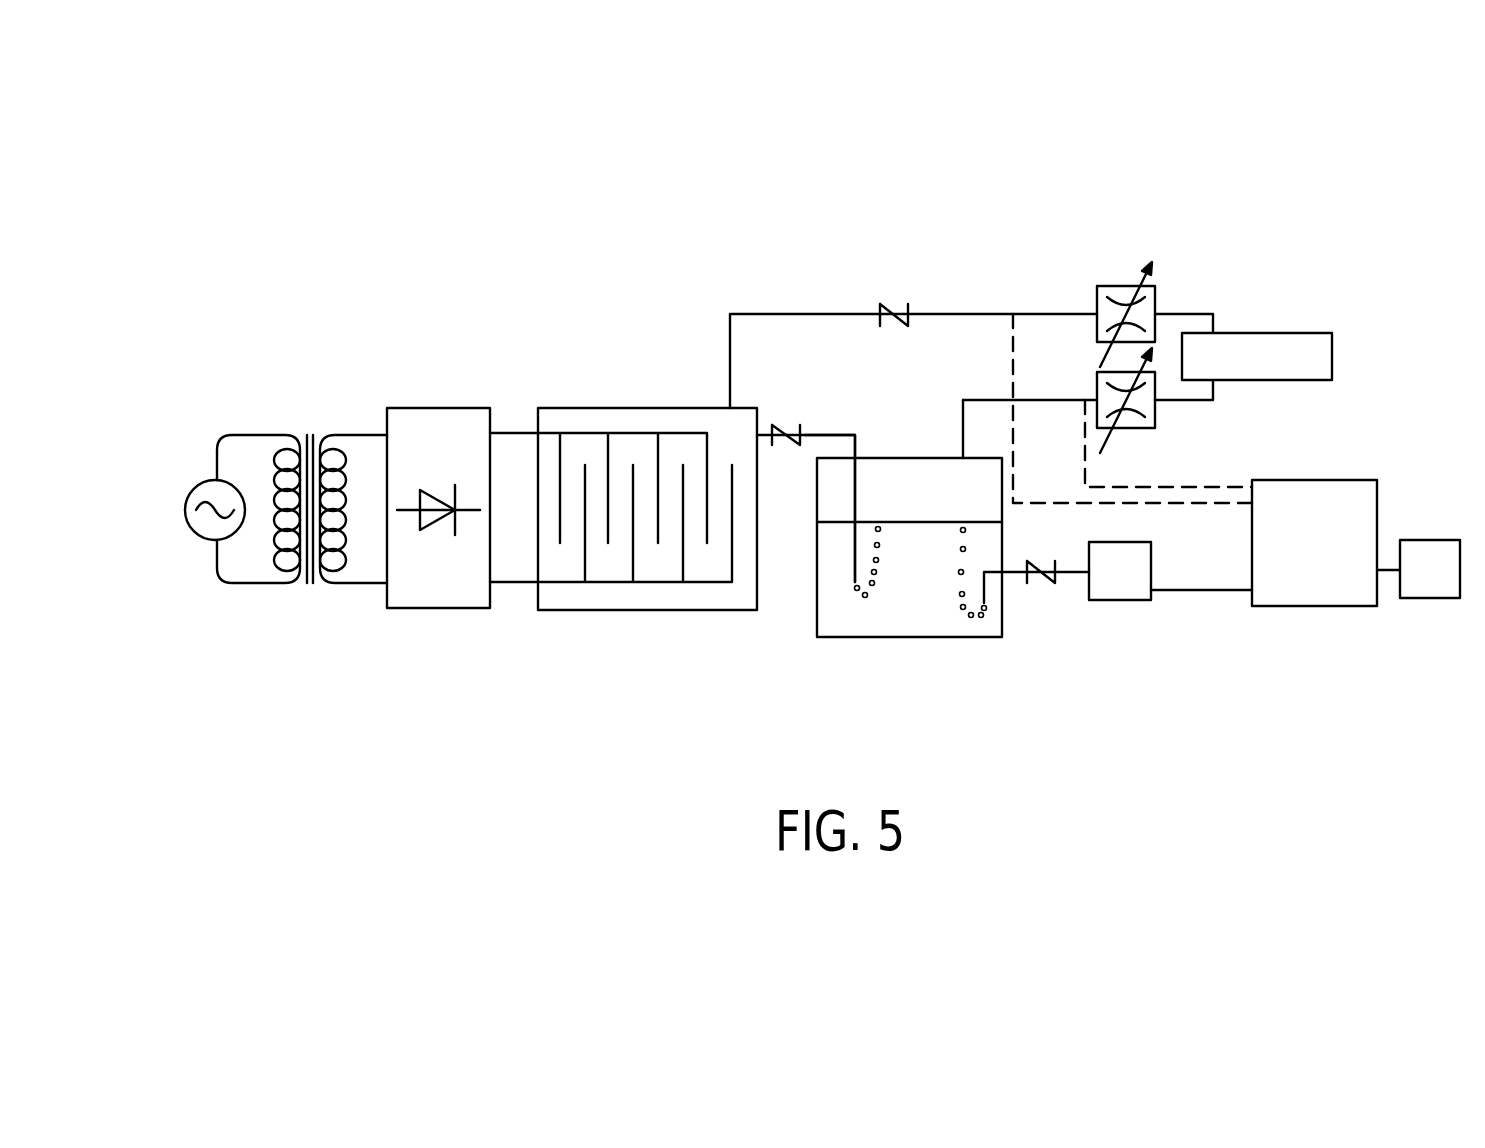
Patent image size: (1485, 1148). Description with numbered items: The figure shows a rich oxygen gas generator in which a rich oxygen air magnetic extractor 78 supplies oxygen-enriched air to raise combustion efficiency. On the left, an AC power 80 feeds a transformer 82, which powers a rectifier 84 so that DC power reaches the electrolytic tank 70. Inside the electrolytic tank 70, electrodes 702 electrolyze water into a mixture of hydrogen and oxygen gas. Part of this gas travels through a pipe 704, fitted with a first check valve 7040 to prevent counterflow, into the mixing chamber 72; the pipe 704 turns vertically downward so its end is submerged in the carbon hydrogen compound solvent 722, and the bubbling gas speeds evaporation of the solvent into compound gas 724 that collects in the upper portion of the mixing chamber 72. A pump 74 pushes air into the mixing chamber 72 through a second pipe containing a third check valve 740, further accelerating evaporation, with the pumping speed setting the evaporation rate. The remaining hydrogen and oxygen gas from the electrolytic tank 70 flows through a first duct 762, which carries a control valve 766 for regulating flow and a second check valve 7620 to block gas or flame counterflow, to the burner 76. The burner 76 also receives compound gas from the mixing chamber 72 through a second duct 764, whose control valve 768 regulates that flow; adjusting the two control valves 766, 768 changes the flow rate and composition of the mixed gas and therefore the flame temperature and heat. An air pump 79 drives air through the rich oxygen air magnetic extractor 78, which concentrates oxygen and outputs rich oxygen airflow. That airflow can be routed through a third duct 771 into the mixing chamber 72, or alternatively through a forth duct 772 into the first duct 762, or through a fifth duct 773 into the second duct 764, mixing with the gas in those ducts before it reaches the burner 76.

The AC power 80 is at (198, 484).
The transformer 82 is at (307, 430).
The rectifier 84 is at (428, 407).
The electrolytic tank 70 is at (647, 522).
The electrodes 702 is at (585, 570).
The first check valve 7040 is at (778, 422).
The pipe 704 is at (845, 432).
The mixing chamber 72 is at (903, 457).
The compound gas 724 is at (943, 475).
The carbon hydrogen compound solvent 722 is at (985, 625).
The third check valve 740 is at (1028, 568).
The pump 74 is at (1138, 570).
The third duct 771 is at (1197, 593).
The rich oxygen air magnetic extractor 78 is at (1308, 606).
The air pump 79 is at (1425, 598).
The first duct 762 is at (816, 313).
The second check valve 7620 is at (892, 304).
The control valve 766 is at (1118, 285).
The control valve 768 is at (1097, 386).
The second duct 764 is at (1045, 403).
The burner 76 is at (1277, 333).
The forth duct 772 is at (1157, 505).
The fifth duct 773 is at (1160, 487).